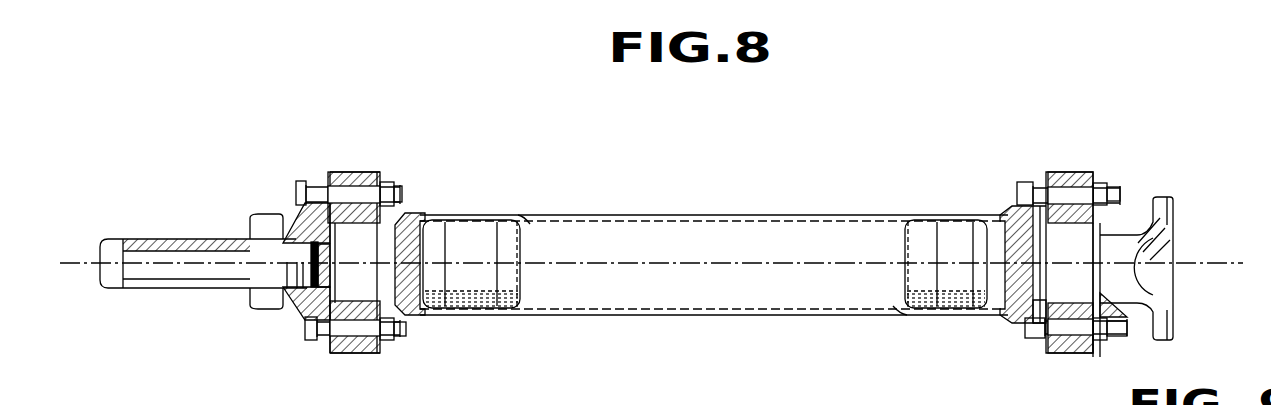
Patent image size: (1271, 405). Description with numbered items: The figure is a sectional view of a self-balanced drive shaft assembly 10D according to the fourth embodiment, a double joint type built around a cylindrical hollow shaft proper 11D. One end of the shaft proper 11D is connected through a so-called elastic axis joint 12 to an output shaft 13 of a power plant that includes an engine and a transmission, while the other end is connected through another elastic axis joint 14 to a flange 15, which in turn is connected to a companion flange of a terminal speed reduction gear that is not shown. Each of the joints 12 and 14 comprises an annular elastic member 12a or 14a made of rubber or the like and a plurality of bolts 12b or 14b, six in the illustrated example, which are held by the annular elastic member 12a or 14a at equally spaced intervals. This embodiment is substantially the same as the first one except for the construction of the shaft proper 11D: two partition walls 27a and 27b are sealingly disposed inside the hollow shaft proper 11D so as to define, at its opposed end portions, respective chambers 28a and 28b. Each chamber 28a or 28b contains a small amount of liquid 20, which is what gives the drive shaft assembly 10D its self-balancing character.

The self-balanced drive shaft assembly 10D is at (849, 203).
The cylindrical shaft proper 11D is at (734, 215).
The elastic axis joint 12 is at (349, 168).
The annular elastic member 12a is at (312, 298).
The bolts 12b is at (365, 172).
The output shaft 13 is at (181, 240).
The elastic axis joint 14 is at (1102, 174).
The annular elastic member 14a is at (1033, 320).
The bolts 14b is at (1060, 186).
The flange 15 is at (1180, 249).
The liquid 20 is at (473, 306).
The partition wall 27a is at (532, 215).
The partition wall 27b is at (902, 297).
The chamber 28a is at (476, 220).
The chamber 28b is at (960, 222).